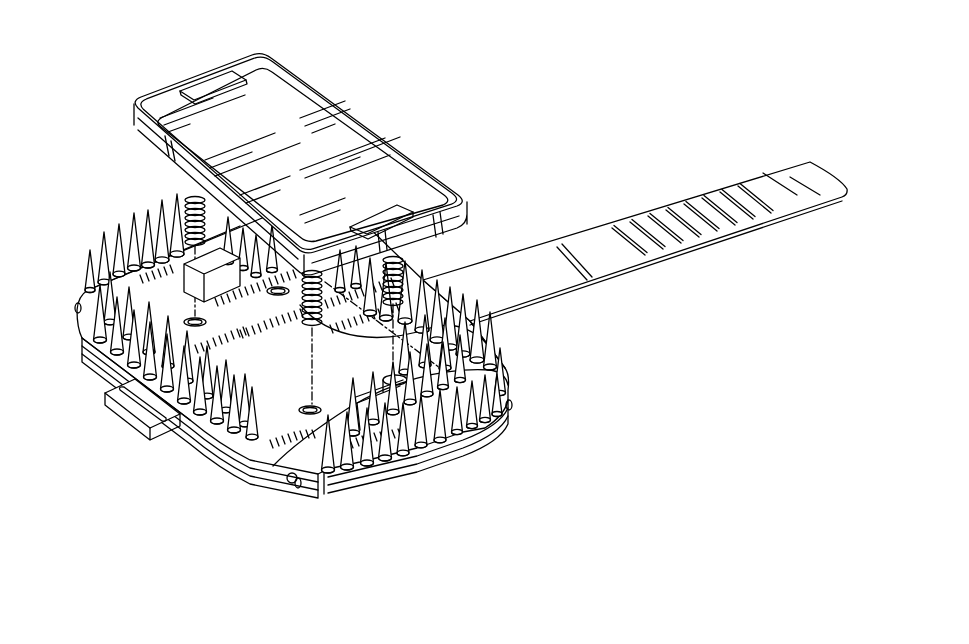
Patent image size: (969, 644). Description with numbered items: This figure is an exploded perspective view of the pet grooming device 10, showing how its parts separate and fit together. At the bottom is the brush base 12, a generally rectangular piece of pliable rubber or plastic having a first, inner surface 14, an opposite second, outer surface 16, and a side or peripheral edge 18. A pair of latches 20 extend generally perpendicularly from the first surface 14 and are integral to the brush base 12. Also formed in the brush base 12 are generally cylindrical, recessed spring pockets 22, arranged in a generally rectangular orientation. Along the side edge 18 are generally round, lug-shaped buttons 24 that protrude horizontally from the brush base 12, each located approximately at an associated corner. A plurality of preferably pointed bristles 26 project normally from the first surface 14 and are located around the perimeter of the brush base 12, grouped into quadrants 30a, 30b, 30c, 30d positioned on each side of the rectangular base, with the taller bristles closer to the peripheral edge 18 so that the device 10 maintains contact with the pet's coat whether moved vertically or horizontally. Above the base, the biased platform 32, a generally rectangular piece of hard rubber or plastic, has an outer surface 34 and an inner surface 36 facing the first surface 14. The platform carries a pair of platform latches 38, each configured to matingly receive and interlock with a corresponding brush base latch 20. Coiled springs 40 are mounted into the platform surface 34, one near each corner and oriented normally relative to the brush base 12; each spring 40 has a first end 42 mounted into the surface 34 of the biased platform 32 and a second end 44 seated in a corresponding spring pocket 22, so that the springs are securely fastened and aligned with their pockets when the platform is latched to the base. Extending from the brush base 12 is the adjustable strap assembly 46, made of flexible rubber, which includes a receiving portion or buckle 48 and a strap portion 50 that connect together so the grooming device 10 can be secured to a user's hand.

The grooming device 10 is at (109, 95).
The brush base 12 is at (164, 314).
The first, inner surface 14 is at (267, 460).
The second, outer surface 16 is at (193, 437).
The side or peripheral edge 18 is at (385, 483).
The latch 20 is at (158, 232).
The spring pocket 22 is at (125, 278).
The button 24 is at (78, 308).
The bristles 26 is at (118, 218).
The quadrant 30a is at (482, 333).
The quadrant 30b is at (147, 235).
The quadrant 30c is at (150, 324).
The quadrant 30d is at (410, 436).
The biased platform 32 is at (422, 178).
The outer surface 34 is at (310, 110).
The inner surface 36 is at (447, 244).
The platform latch 38 is at (466, 208).
The spring 40 is at (184, 262).
The first end 42 is at (413, 263).
The second end 44 is at (443, 330).
The adjustable strap assembly 46 is at (655, 210).
The receiving portion or buckle 48 is at (123, 420).
The strap portion 50 is at (732, 227).